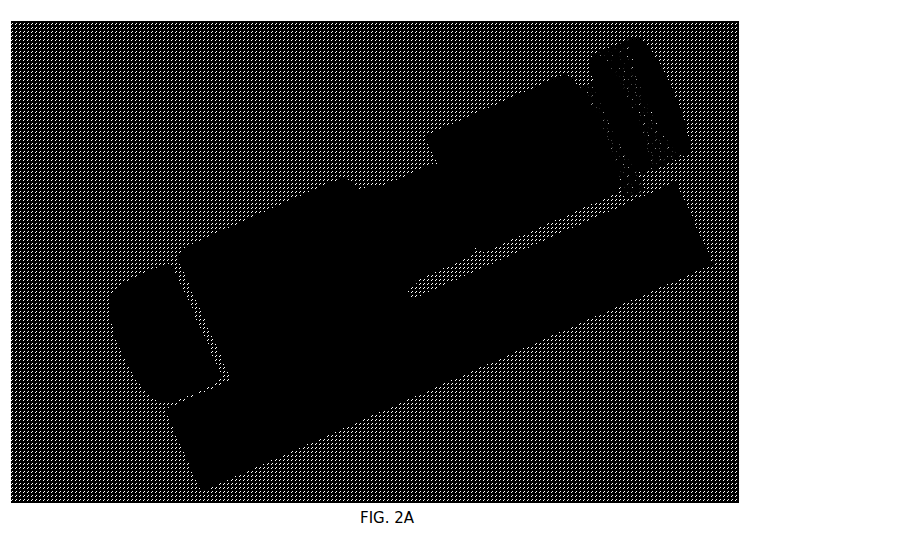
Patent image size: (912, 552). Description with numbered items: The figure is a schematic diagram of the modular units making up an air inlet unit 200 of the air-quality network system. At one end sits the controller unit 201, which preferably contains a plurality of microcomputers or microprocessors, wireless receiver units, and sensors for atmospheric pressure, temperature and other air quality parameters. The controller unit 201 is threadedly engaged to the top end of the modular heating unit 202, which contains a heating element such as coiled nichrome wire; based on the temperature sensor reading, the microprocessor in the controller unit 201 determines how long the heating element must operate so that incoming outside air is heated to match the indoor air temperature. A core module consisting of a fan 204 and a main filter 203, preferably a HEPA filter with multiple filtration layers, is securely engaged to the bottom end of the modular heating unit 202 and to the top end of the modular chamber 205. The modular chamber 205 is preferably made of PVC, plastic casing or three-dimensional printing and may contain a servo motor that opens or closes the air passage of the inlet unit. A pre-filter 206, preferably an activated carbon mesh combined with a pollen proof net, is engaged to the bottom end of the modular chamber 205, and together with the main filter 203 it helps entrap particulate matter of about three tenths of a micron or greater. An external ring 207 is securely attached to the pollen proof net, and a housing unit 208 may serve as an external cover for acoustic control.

The air inlet unit 200 is at (767, 92).
The controller unit 201 is at (185, 357).
The modular heating unit 202 is at (220, 286).
The main filter 203 is at (388, 257).
The fan 204 is at (396, 213).
The modular chamber 205 is at (580, 162).
The pre-filter 206 is at (518, 118).
The external ring 207 is at (658, 103).
The housing unit 208 is at (656, 139).